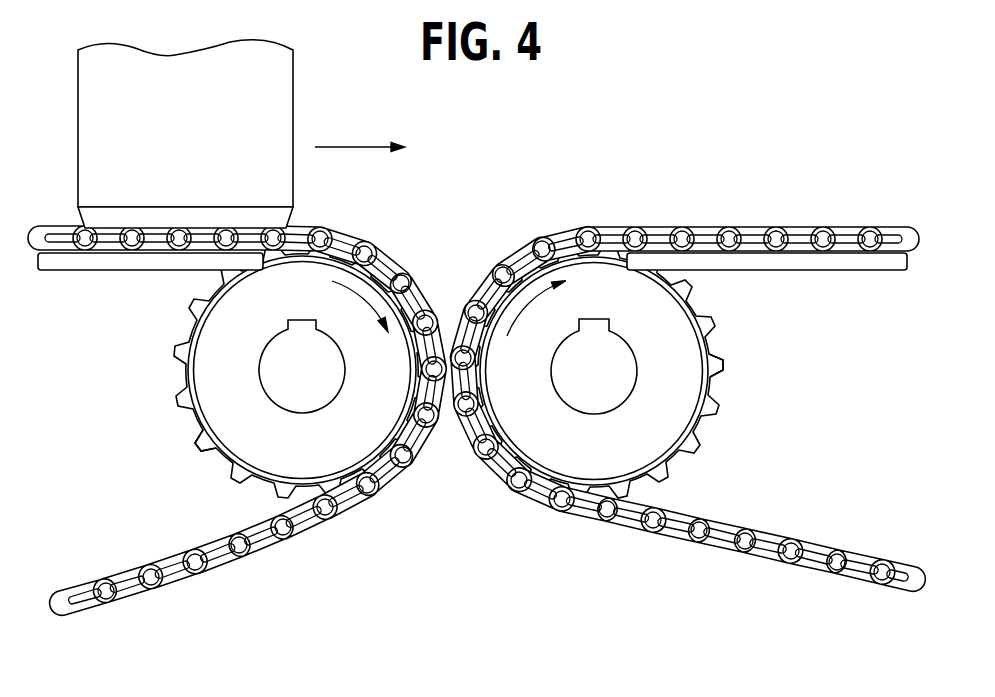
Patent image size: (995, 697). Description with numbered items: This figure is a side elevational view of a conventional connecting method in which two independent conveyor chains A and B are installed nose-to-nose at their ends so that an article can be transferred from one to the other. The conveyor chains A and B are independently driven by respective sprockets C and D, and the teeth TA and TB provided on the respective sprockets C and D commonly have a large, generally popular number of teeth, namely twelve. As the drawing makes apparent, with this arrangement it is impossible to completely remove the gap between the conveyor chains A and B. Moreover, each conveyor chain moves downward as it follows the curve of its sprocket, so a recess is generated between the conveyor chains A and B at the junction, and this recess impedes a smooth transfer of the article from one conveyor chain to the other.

The conveyor chain A is at (345, 242).
The conveyor chain B is at (710, 227).
The sprocket C is at (218, 372).
The sprocket D is at (655, 433).
The teeth TA is at (186, 445).
The teeth TB is at (723, 366).